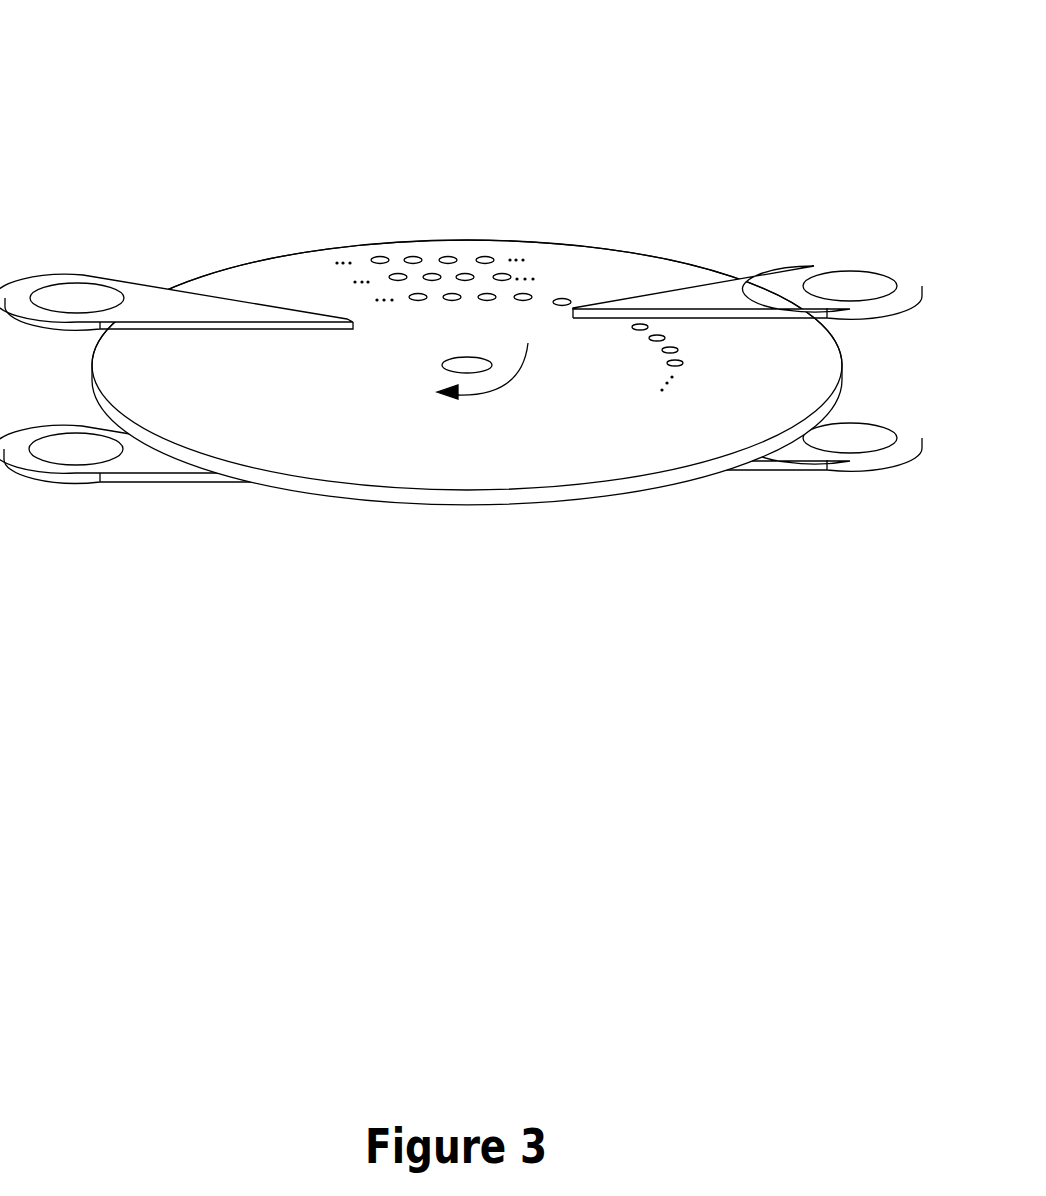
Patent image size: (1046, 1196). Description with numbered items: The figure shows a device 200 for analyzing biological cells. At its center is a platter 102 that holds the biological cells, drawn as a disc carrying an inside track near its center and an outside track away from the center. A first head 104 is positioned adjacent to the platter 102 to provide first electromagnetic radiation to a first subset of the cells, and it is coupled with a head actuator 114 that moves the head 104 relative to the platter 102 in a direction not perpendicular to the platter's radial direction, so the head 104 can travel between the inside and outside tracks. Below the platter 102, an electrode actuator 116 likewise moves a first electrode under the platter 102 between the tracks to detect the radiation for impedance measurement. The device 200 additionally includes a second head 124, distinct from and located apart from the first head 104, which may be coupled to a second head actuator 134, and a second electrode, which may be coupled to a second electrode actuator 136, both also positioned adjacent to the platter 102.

The device 200 is at (461, 314).
The platter 102 is at (283, 283).
The head 104 is at (747, 222).
The second head 124 is at (252, 233).
The second head actuator 134 is at (58, 277).
The second electrode actuator 136 is at (57, 480).
The head actuator 114 is at (857, 265).
The electrode actuator 116 is at (855, 470).